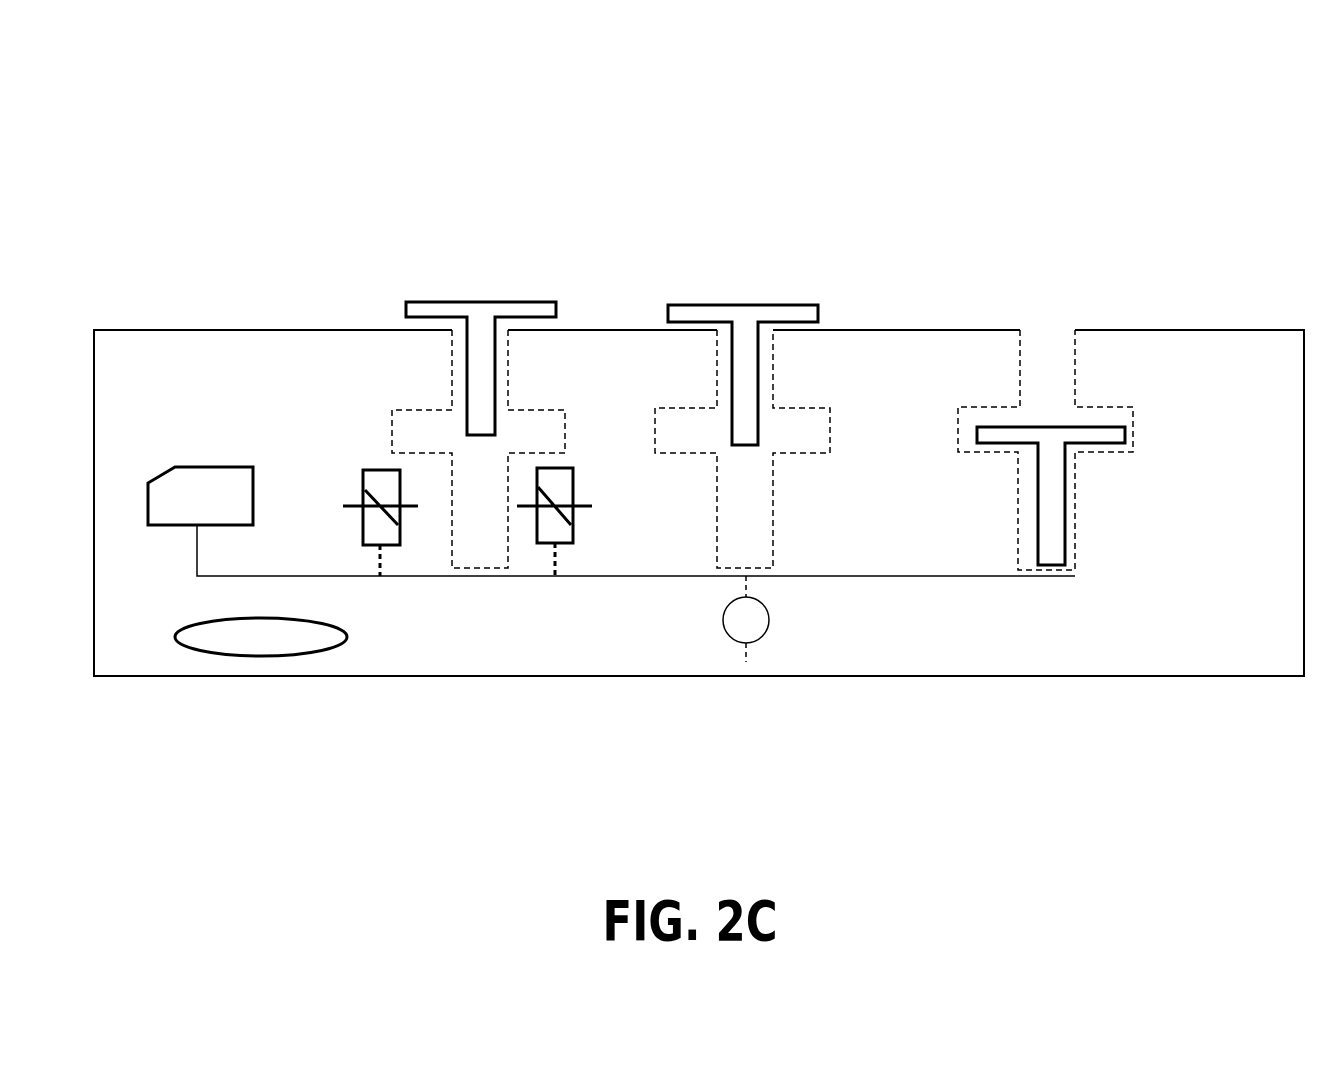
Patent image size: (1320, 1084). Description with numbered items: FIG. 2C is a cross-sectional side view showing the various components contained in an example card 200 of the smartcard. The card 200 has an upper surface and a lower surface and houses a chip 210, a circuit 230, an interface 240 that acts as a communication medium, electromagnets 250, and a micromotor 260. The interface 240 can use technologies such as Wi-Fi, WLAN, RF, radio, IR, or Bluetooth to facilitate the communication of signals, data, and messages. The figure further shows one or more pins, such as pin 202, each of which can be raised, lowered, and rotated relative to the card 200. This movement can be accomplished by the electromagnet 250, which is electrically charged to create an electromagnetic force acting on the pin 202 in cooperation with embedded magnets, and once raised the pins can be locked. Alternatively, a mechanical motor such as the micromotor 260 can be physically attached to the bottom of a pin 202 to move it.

The card 200 is at (1075, 192).
The pin 202 is at (472, 298).
The chip 210 is at (205, 455).
The circuit 230 is at (935, 588).
The interface 240 is at (268, 665).
The electromagnet 250 is at (377, 588).
The micromotor 260 is at (713, 635).